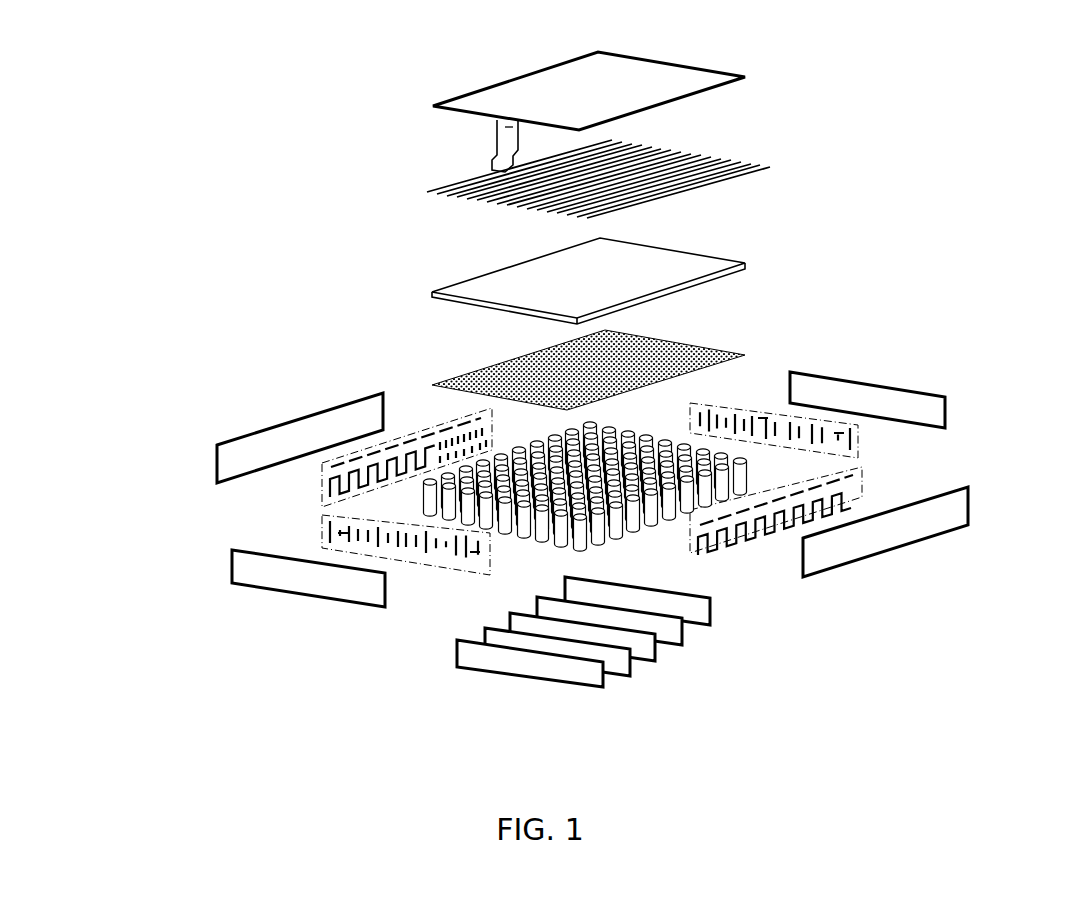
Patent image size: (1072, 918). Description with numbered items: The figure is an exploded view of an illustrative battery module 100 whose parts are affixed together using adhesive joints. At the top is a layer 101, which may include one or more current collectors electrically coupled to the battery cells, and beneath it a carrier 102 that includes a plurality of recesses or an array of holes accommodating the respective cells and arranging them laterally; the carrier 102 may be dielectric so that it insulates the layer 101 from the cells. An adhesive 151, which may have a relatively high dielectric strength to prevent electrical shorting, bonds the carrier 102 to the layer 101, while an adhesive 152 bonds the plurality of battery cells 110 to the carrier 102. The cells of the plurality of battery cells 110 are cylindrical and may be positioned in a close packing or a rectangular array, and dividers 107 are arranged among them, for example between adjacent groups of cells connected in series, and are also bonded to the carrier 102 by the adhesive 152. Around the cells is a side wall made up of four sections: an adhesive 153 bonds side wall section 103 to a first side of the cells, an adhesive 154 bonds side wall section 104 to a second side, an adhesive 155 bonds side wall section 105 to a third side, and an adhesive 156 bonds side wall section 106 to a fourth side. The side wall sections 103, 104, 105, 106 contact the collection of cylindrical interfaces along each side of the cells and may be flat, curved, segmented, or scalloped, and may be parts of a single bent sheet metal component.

The battery module 100 is at (1027, 24).
The layer 101 is at (570, 94).
The adhesive 151 is at (730, 158).
The carrier 102 is at (560, 280).
The adhesive 152 is at (712, 348).
The plurality of battery cells 110 is at (560, 482).
The side wall section 104 is at (218, 445).
The side wall section 105 is at (923, 390).
The side wall section 106 is at (233, 582).
The side wall section 103 is at (948, 488).
The adhesive 154 is at (322, 485).
The adhesive 156 is at (435, 572).
The adhesive 155 is at (733, 405).
The adhesive 153 is at (730, 547).
The dividers 107 is at (603, 688).